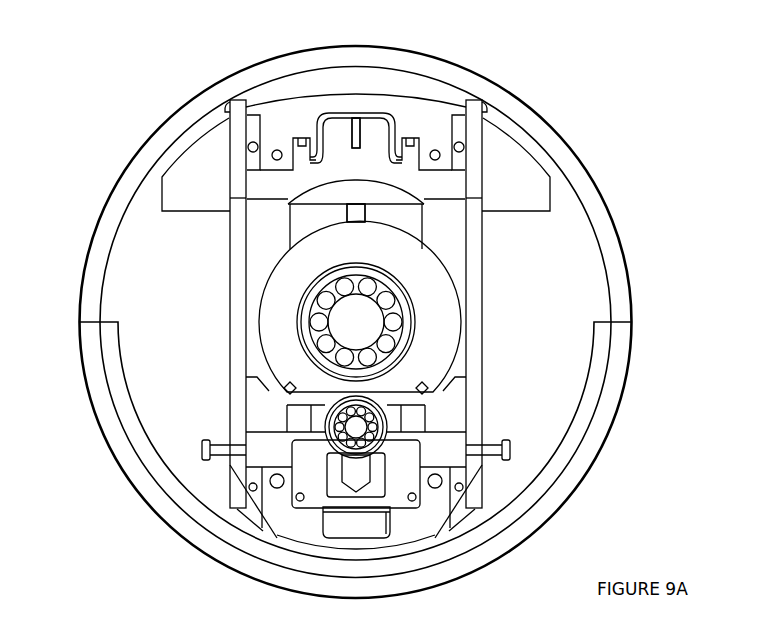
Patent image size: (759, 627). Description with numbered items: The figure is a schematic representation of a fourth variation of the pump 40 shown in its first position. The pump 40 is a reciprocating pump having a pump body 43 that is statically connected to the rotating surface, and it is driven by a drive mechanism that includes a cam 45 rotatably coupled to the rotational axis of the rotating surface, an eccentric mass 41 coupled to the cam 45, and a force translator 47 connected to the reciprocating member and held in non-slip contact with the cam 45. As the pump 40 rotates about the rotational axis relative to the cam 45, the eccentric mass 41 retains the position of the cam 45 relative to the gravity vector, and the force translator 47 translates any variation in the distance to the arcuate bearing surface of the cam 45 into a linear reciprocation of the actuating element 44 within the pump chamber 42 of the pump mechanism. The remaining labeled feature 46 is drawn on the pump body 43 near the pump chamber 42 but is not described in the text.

The pump 40 is at (499, 58).
The eccentric mass 41 is at (614, 372).
The pump chamber 42 is at (398, 529).
The pump body 43 is at (314, 540).
The actuating element 44 is at (320, 500).
The cam 45 is at (439, 298).
The block window 46 is at (354, 523).
The force translator 47 is at (381, 437).